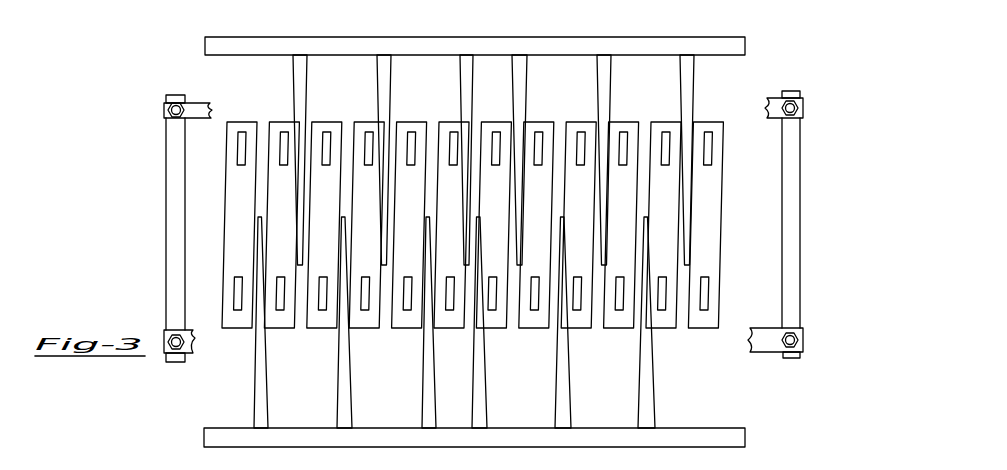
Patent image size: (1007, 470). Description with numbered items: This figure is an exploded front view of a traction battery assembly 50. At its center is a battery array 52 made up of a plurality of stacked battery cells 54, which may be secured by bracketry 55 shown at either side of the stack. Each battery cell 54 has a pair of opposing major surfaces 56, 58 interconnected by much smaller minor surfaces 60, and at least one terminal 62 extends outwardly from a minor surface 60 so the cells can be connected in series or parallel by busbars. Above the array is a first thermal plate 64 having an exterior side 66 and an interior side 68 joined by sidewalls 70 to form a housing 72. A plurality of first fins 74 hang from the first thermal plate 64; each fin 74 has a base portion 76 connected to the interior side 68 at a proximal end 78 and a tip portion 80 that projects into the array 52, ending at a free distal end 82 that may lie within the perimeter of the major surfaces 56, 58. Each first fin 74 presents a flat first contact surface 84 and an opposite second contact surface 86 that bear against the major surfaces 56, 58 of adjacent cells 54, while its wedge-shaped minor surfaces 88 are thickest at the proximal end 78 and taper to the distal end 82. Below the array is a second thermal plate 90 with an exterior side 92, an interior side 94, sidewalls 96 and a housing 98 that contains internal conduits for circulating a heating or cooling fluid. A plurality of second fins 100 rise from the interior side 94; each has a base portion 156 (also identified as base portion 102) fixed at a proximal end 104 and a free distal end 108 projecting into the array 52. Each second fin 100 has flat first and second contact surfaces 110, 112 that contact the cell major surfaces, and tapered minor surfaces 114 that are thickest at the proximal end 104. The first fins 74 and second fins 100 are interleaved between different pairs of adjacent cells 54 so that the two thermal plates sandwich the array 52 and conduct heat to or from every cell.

The traction battery assembly 50 is at (798, 57).
The battery array 52 is at (727, 201).
The battery cell 54 is at (727, 201).
The major surface 56 is at (712, 123).
The major surface 58 is at (227, 157).
The bracketry 55 is at (803, 185).
The minor surface 60 is at (239, 232).
The terminal 62 is at (228, 335).
The first thermal plate 64 is at (441, 52).
The exterior side 66 is at (441, 52).
The interior side 68 is at (441, 52).
The sidewalls 70 is at (441, 52).
The housing 72 is at (441, 52).
The first fin 74 is at (527, 78).
The base portion 76 is at (376, 160).
The proximal end 78 is at (376, 160).
The tip portion 80 is at (690, 257).
The distal end 82 is at (299, 328).
The first contact surface 84 is at (597, 160).
The second contact surface 86 is at (610, 108).
The minor surface 88 is at (378, 80).
The second thermal plate 90 is at (501, 235).
The exterior side 92 is at (501, 235).
The interior side 94 is at (501, 235).
The sidewalls 96 is at (745, 440).
The housing 98 is at (205, 49).
The second fin 100 is at (479, 214).
The base portion 102 is at (338, 412).
The proximal end 104 is at (489, 382).
The distal end 108 is at (476, 178).
The first contact surface 110 is at (533, 214).
The second contact surface 112 is at (533, 214).
The minor surface 114 is at (640, 372).
The base portion 156 is at (422, 400).